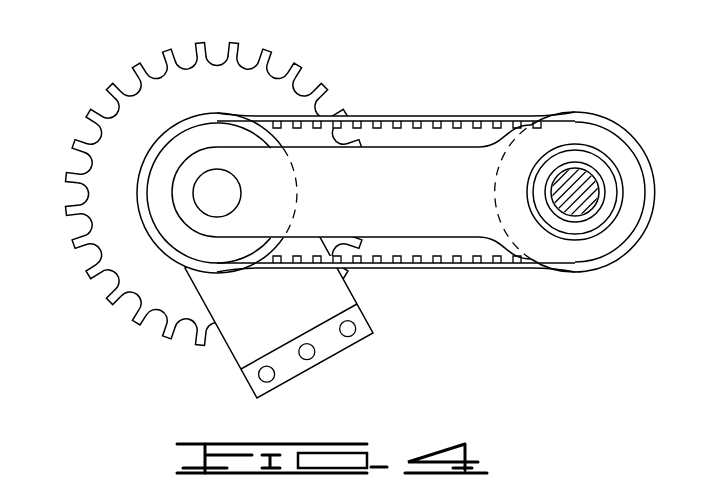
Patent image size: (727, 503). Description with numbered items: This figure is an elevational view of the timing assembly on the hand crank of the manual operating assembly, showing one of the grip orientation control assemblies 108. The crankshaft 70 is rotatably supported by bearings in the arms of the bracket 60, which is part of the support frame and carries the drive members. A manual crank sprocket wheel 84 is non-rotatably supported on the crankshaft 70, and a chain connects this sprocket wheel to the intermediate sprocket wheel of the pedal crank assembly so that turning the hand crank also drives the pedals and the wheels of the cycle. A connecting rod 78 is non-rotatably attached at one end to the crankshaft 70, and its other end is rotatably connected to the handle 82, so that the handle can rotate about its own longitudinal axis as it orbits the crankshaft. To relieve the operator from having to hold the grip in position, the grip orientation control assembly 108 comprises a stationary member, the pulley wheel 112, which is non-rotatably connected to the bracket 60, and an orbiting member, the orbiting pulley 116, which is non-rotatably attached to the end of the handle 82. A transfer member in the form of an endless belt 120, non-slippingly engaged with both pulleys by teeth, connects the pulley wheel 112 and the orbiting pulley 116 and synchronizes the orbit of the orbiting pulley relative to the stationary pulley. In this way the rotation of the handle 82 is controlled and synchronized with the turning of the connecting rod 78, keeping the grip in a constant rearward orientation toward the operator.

The bracket 60 is at (233, 358).
The crankshaft 70 is at (203, 185).
The connecting rod 78 is at (413, 162).
The handle 82 is at (587, 180).
The manual crank sprocket wheel 84 is at (240, 82).
The grip orientation control assembly 108 is at (508, 271).
The pulley wheel 112 is at (590, 118).
The orbiting pulley 116 is at (185, 118).
The belt 120 is at (373, 115).